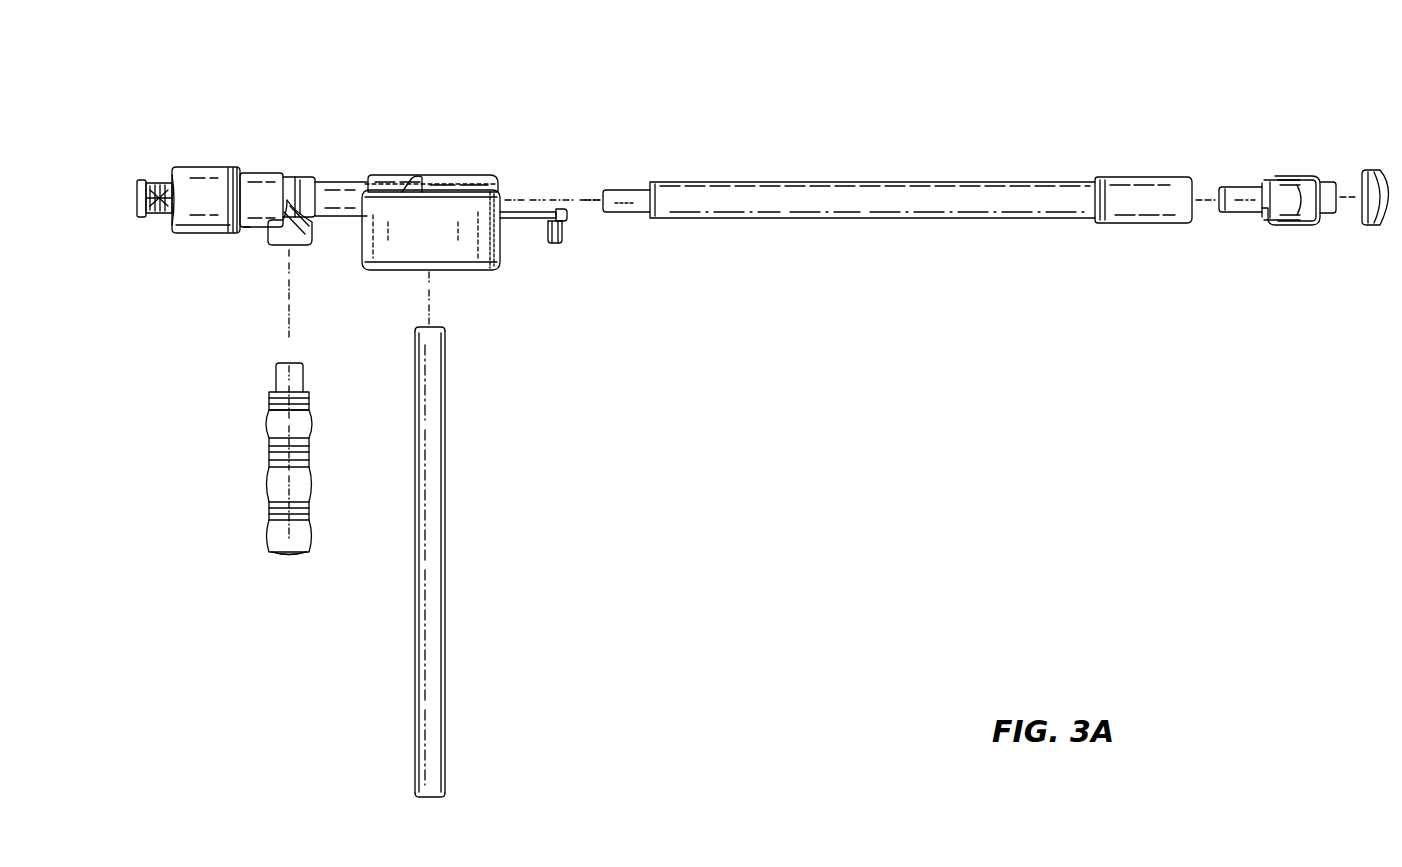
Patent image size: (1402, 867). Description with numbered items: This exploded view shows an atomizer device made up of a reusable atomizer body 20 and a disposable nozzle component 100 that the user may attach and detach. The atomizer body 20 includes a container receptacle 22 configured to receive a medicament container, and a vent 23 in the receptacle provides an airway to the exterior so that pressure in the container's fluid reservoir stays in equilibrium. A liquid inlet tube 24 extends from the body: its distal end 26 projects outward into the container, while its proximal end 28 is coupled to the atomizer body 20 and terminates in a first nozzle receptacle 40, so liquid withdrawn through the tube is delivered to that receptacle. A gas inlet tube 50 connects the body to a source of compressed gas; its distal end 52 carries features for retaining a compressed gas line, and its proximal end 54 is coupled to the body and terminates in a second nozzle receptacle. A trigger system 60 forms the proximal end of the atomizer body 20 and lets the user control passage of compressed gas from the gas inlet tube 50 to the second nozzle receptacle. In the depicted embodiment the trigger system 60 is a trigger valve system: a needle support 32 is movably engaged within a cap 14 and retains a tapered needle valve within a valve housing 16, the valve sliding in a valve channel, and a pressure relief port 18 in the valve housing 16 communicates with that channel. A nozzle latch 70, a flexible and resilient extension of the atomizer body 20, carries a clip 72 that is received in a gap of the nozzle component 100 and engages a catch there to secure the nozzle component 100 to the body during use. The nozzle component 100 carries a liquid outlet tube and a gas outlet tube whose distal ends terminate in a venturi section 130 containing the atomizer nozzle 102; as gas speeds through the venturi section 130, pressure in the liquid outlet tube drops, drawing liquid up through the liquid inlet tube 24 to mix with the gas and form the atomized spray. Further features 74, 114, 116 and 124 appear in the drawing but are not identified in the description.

The cap 14 is at (186, 235).
The valve housing 16 is at (265, 173).
The pressure relief port 18 is at (252, 227).
The atomizer body 20 is at (440, 175).
The container receptacle 22 is at (505, 262).
The vent 23 is at (392, 190).
The liquid inlet tube 24 is at (482, 559).
The distal end 26 is at (440, 798).
The proximal end 28 is at (440, 325).
The needle support 32 is at (140, 190).
The first nozzle receptacle 40 is at (498, 188).
The gas inlet tube 50 is at (263, 432).
The distal end 52 is at (290, 555).
The proximal end 54 is at (302, 245).
The trigger system 60 is at (200, 165).
The nozzle latch 70 is at (527, 210).
The clip 72 is at (560, 208).
The peg 74 is at (563, 232).
The nozzle component 100 is at (943, 157).
The atomizer nozzle 102 is at (1384, 178).
The connector body 114 is at (1272, 215).
The shaft proximal end 116 is at (626, 192).
The connector stub 124 is at (1222, 190).
The venturi section 130 is at (1310, 225).